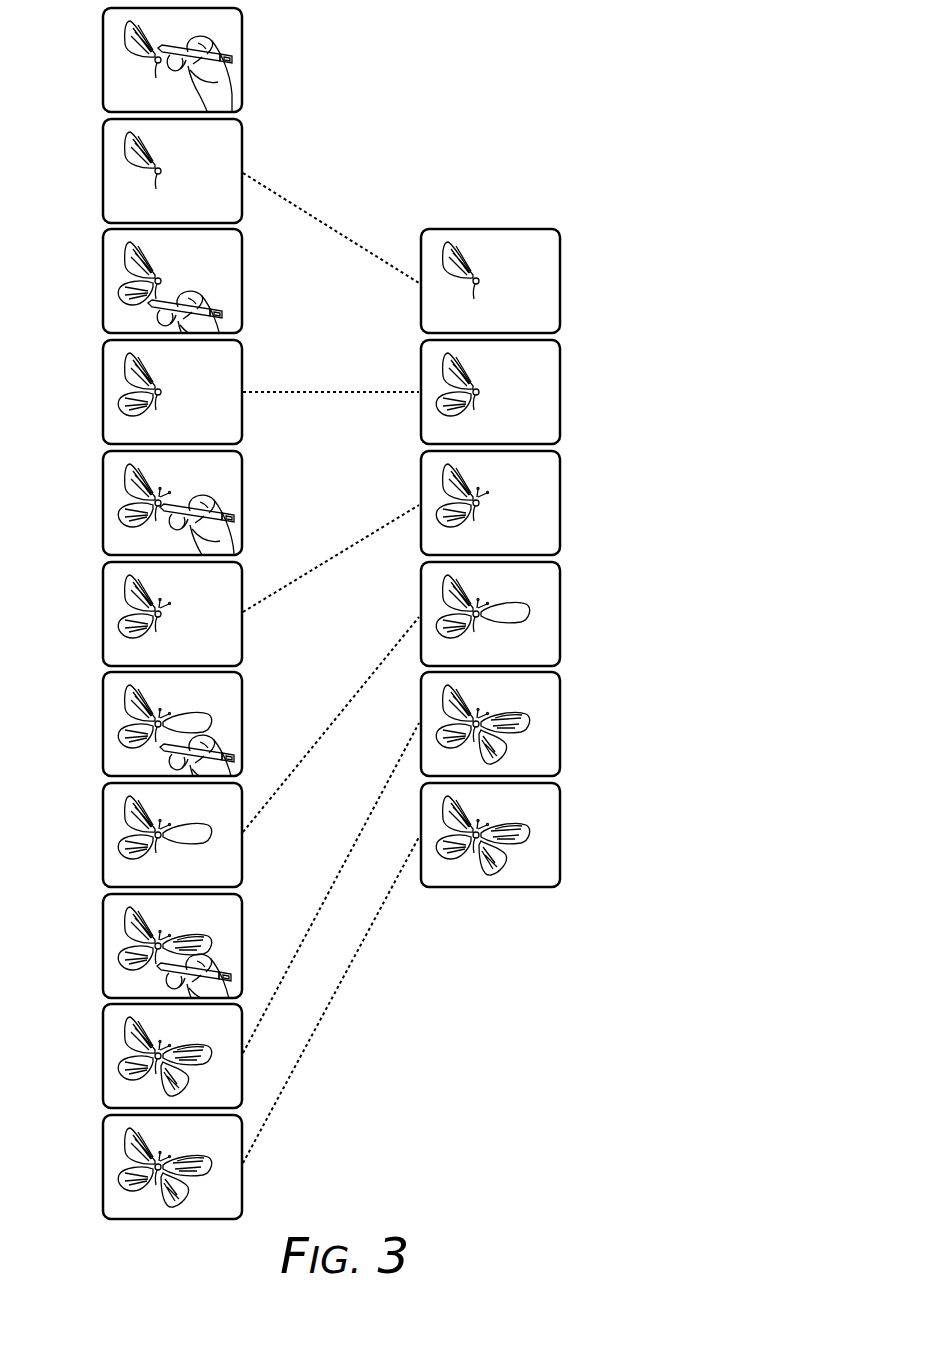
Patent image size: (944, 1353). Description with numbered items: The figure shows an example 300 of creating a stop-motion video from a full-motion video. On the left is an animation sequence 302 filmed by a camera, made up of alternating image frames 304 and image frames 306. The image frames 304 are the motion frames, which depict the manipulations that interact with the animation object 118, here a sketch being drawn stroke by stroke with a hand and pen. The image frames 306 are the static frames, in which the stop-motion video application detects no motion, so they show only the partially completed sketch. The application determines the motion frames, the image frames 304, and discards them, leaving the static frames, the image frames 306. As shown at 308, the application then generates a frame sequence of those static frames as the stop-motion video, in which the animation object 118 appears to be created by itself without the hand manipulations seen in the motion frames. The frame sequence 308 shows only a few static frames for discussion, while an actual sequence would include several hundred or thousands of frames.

The example 300 is at (558, 84).
The animation sequence 302 is at (270, 130).
The image frames 304 is at (147, 520).
The image frames 306 is at (147, 669).
The frame sequence 308 is at (587, 358).
The animation object 118 is at (483, 264).